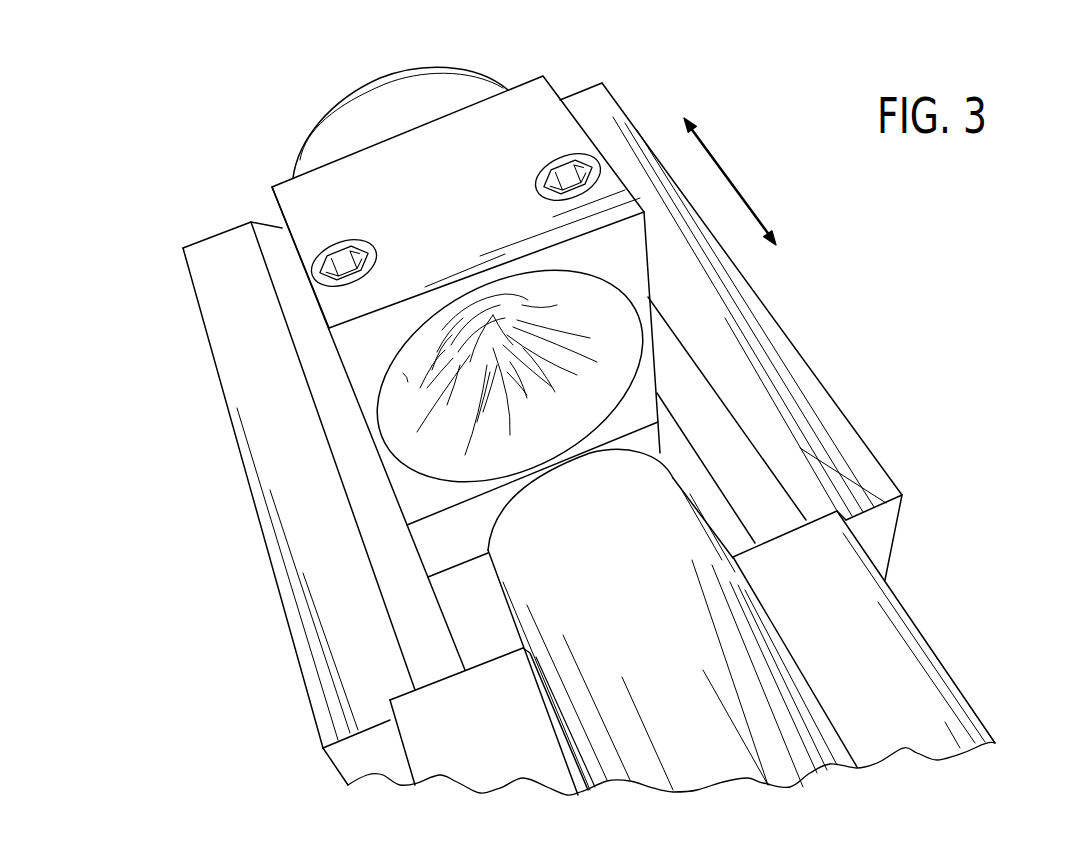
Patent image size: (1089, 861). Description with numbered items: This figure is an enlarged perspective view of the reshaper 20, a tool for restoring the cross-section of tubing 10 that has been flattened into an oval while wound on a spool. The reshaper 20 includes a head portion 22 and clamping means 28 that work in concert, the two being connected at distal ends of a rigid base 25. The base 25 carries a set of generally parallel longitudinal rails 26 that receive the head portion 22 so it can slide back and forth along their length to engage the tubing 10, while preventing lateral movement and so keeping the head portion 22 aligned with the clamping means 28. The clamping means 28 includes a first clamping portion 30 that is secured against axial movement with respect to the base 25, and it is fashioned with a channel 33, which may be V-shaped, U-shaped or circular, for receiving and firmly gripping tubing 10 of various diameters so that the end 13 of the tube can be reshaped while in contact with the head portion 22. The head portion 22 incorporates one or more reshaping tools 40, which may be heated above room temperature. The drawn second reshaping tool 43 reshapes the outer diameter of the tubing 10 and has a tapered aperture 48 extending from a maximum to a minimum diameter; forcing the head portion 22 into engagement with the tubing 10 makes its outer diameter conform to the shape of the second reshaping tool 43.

The tubing 10 is at (670, 530).
The end of tube 13 is at (678, 447).
The reshaper 20 is at (168, 118).
The head portion 22 is at (530, 100).
The base 25 is at (880, 530).
The longitudinal rails 26 is at (402, 565).
The clamping means 28 is at (973, 633).
The first clamping portion 30 is at (489, 731).
The channel 33 is at (838, 708).
The reshaping tool 40 is at (427, 397).
The second reshaping tool 43 is at (405, 372).
The tapered aperture 48 is at (415, 350).